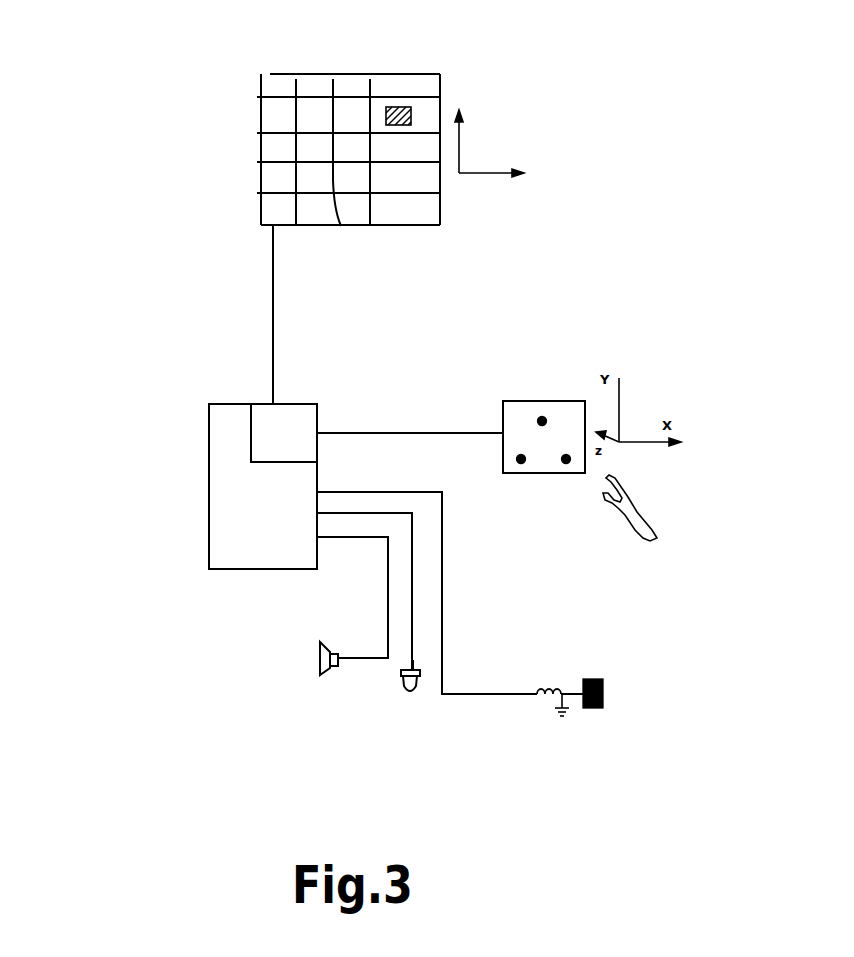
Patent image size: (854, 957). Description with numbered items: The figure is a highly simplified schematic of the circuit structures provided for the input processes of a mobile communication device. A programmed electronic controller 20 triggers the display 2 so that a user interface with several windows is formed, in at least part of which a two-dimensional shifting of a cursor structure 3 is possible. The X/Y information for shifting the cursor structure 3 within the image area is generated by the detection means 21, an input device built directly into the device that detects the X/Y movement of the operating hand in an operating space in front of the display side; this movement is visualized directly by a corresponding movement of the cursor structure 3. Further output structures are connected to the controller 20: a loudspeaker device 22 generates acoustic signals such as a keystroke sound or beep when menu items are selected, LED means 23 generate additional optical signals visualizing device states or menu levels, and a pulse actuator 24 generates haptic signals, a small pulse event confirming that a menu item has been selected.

The display 2 is at (222, 144).
The cursor structure 3 is at (400, 107).
The programmed electronic controller 20 is at (222, 506).
The detection means 21 is at (551, 385).
The loudspeaker device 22 is at (326, 677).
The LED means 23 is at (409, 695).
The pulse actuator 24 is at (590, 712).